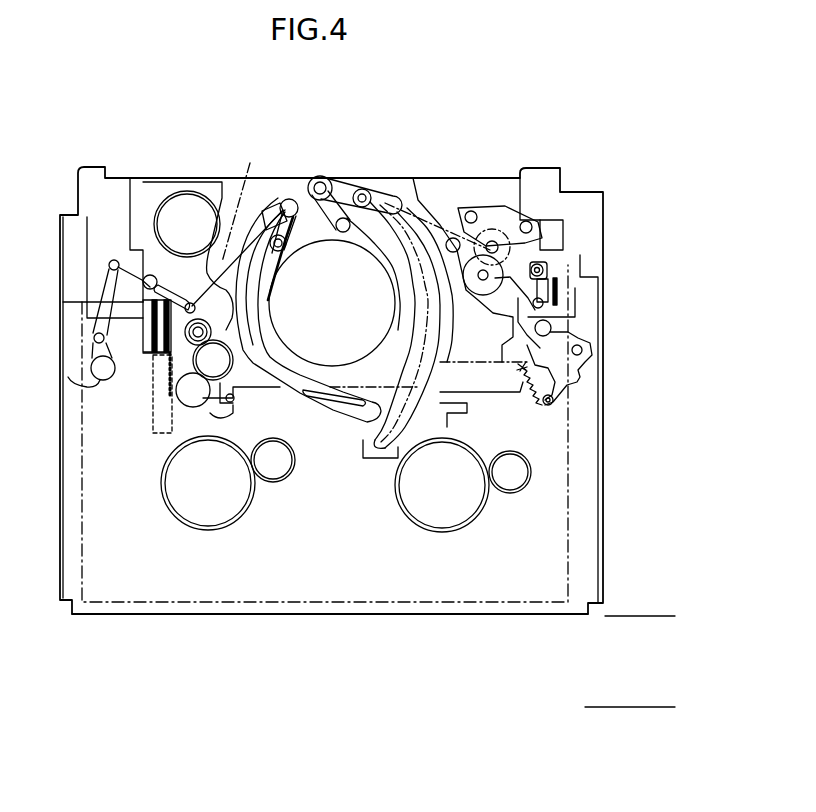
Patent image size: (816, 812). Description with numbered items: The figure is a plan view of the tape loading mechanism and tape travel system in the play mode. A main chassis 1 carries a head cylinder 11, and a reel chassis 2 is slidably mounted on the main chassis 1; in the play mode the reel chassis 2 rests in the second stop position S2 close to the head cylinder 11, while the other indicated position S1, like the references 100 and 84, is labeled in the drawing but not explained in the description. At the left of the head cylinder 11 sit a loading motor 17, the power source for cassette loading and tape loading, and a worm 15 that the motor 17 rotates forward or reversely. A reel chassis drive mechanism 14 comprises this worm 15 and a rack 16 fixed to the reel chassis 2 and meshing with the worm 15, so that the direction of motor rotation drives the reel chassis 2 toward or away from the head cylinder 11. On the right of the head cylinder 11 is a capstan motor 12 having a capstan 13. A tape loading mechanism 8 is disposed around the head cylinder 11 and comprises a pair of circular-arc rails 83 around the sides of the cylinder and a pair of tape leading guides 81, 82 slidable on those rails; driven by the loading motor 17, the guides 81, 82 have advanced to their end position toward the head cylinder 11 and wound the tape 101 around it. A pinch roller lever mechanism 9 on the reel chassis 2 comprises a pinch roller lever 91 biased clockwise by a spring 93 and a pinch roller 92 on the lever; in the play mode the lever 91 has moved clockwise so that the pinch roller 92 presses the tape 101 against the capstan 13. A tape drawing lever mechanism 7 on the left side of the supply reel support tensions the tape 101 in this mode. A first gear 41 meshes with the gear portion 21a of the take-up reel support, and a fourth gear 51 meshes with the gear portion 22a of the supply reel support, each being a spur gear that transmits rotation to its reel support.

The main chassis 1 is at (585, 228).
The reel chassis 2 is at (326, 588).
The image forming apparatus 100 is at (421, 594).
The loading motor 17 is at (183, 215).
The tape 101 is at (247, 200).
The rack 16 is at (85, 306).
The tape drawing lever mechanism 7 is at (88, 334).
The reel chassis drive mechanism 14 is at (139, 350).
The worm 15 is at (168, 392).
The tape loading mechanism 8 is at (283, 197).
The tape leading guide 82 is at (291, 212).
The tape leading guide 81 is at (322, 187).
The head cylinder 11 is at (370, 245).
The guide member 84 is at (316, 402).
The circular-arc rails 83 is at (452, 351).
The capstan motor 12 is at (537, 205).
The capstan 13 is at (492, 247).
The pinch roller 92 is at (499, 262).
The pinch roller lever mechanism 9 is at (570, 297).
The pinch roller lever 91 is at (540, 348).
The spring 93 is at (545, 395).
The gear portion of the supply reel support 22a is at (247, 522).
The fourth gear 51 is at (291, 478).
The gear portion of the take-up reel support 21a is at (405, 520).
The first gear 41 is at (512, 490).
The second stop position S2 is at (655, 618).
The first surface S1 is at (647, 711).